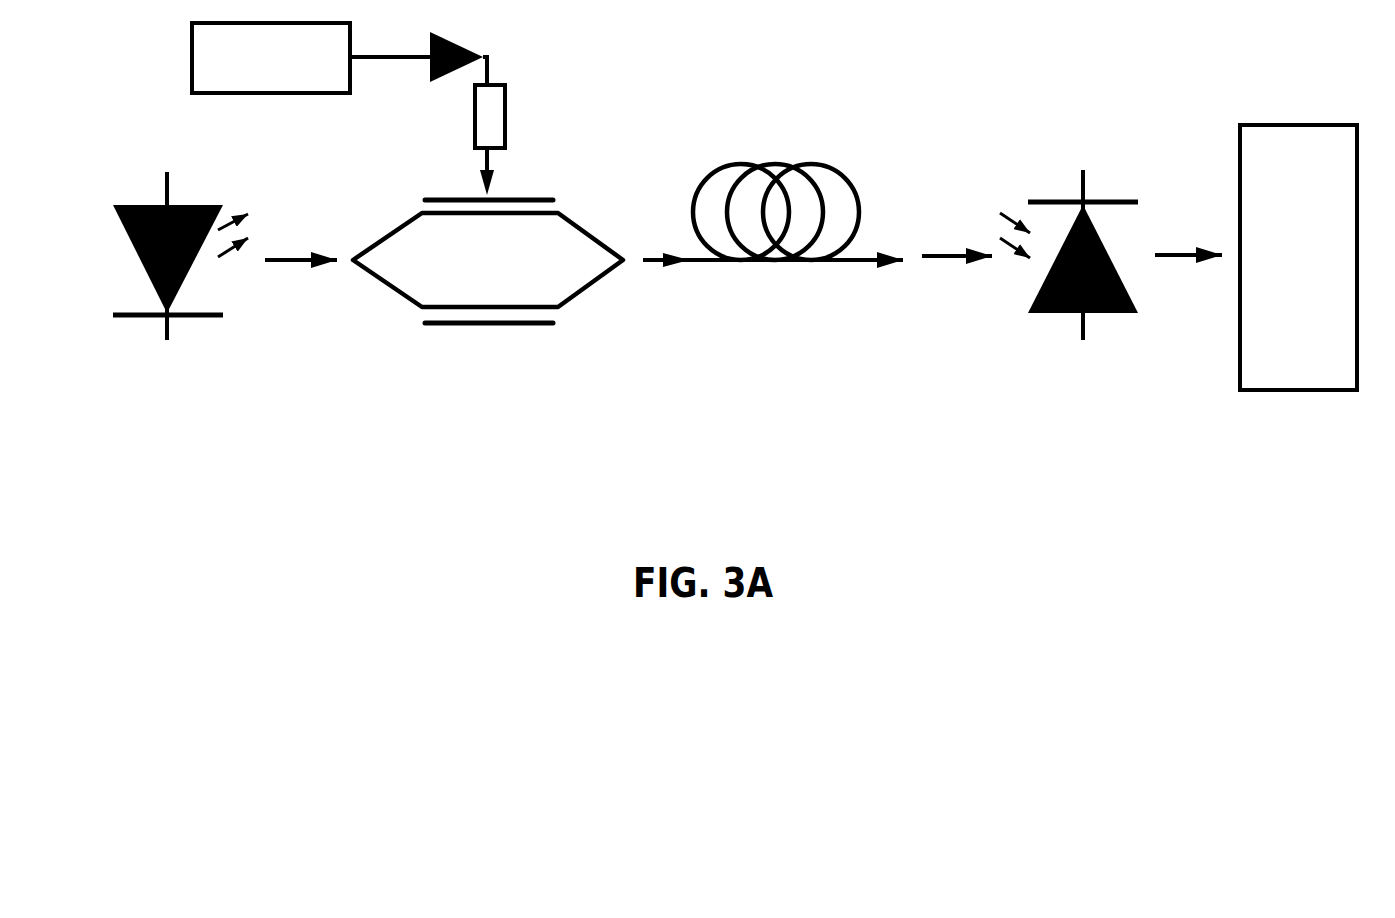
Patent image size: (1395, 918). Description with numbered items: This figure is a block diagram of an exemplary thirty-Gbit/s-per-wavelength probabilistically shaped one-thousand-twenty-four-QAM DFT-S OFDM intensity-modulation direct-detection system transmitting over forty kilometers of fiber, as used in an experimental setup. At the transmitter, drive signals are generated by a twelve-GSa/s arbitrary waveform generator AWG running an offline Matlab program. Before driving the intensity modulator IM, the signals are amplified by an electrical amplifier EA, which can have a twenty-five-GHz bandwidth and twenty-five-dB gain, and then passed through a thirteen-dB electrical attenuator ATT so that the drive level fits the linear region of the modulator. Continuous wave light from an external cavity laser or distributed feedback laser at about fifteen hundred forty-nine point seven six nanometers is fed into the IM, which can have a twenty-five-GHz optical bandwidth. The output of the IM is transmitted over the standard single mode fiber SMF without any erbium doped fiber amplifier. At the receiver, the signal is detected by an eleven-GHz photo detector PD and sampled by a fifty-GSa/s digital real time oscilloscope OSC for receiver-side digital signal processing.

The arbitrary waveform generator AWG is at (271, 58).
The electrical amplifier EA is at (426, 44).
The electrical attenuator ATT is at (446, 140).
The intensity modulator IM is at (488, 261).
The standard single mode fiber SMF is at (773, 235).
The photo detector PD is at (1069, 242).
The oscilloscope OSC is at (1298, 257).